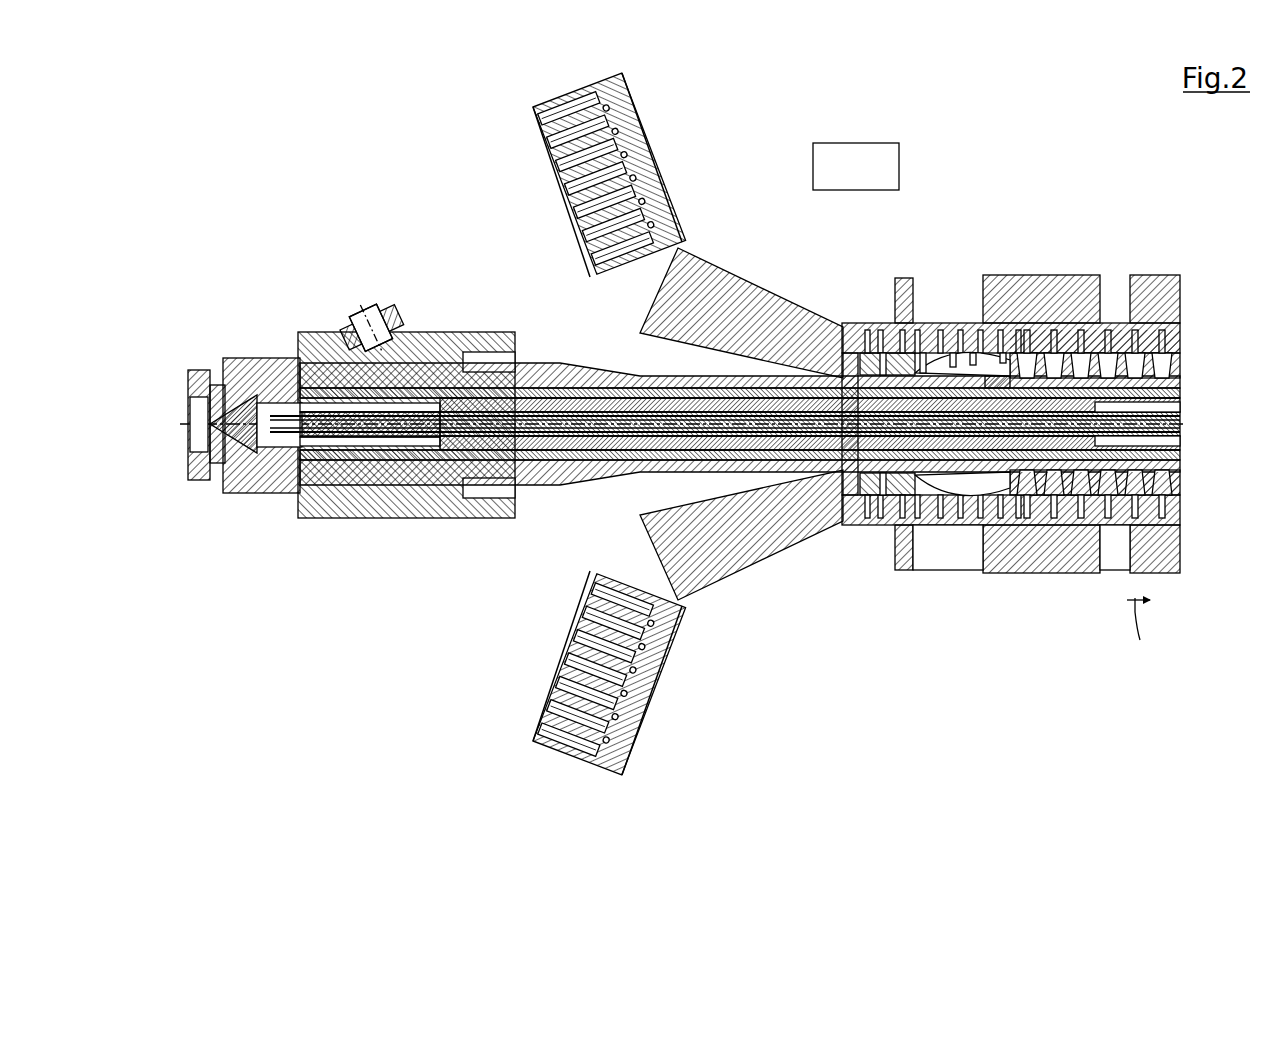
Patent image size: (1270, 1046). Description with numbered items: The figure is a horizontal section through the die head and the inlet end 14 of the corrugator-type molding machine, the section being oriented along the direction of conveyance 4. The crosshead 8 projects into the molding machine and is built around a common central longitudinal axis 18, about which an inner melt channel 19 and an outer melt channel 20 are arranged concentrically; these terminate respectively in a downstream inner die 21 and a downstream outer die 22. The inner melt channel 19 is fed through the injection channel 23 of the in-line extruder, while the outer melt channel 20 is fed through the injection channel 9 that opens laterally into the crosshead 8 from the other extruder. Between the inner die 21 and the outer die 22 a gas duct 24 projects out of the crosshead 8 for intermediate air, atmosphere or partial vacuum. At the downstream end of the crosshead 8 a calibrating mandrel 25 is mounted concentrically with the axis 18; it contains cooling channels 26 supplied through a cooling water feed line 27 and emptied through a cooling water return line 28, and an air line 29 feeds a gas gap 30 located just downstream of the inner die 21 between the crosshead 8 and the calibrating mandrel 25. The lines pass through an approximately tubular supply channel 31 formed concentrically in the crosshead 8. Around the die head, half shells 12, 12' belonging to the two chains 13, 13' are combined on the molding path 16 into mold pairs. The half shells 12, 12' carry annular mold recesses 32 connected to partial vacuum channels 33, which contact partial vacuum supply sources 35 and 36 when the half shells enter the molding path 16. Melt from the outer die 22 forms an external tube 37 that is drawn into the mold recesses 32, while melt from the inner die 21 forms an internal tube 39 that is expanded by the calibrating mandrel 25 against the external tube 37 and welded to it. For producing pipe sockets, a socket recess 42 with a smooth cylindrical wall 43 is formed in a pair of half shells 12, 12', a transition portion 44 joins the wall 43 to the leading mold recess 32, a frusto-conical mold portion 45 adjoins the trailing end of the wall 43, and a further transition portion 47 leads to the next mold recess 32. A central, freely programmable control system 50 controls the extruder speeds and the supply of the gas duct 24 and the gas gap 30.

The direction of conveyance 4 is at (1138, 632).
The crosshead 8 is at (452, 316).
The injection channel 9 is at (368, 300).
The half shell 12 is at (631, 173).
The half shell 12' is at (653, 674).
The chain 13 is at (741, 301).
The chain 13' is at (741, 536).
The inlet end 14 is at (836, 301).
The molding path 16 is at (1141, 272).
The central longitudinal axis 18 is at (180, 424).
The inner melt channel 19 is at (568, 362).
The outer melt channel 20 is at (537, 362).
The inner die 21 is at (992, 376).
The outer die 22 is at (926, 358).
The injection channel 23 is at (200, 410).
The gas duct 24 is at (600, 373).
The calibrating mandrel 25 is at (1180, 470).
The cooling channels 26 is at (1180, 377).
The cooling water feed line 27 is at (540, 488).
The cooling water return line 28 is at (575, 488).
The air line 29 is at (607, 478).
The gas gap 30 is at (1028, 527).
The supply channel 31 is at (355, 440).
The mold recesses 32 is at (577, 172).
The partial vacuum channels 33 is at (645, 152).
The partial vacuum supply source 35 is at (937, 551).
The partial vacuum supply source 36 is at (1105, 543).
The external tube 37 is at (976, 358).
The internal tube 39 is at (1006, 358).
The socket recess 42 is at (927, 525).
The cylindrical wall 43 is at (956, 358).
The transition portion 44 is at (1040, 355).
The frusto-conical mold portion 45 is at (884, 527).
The transition portion 47 is at (884, 358).
The control system 50 is at (890, 175).